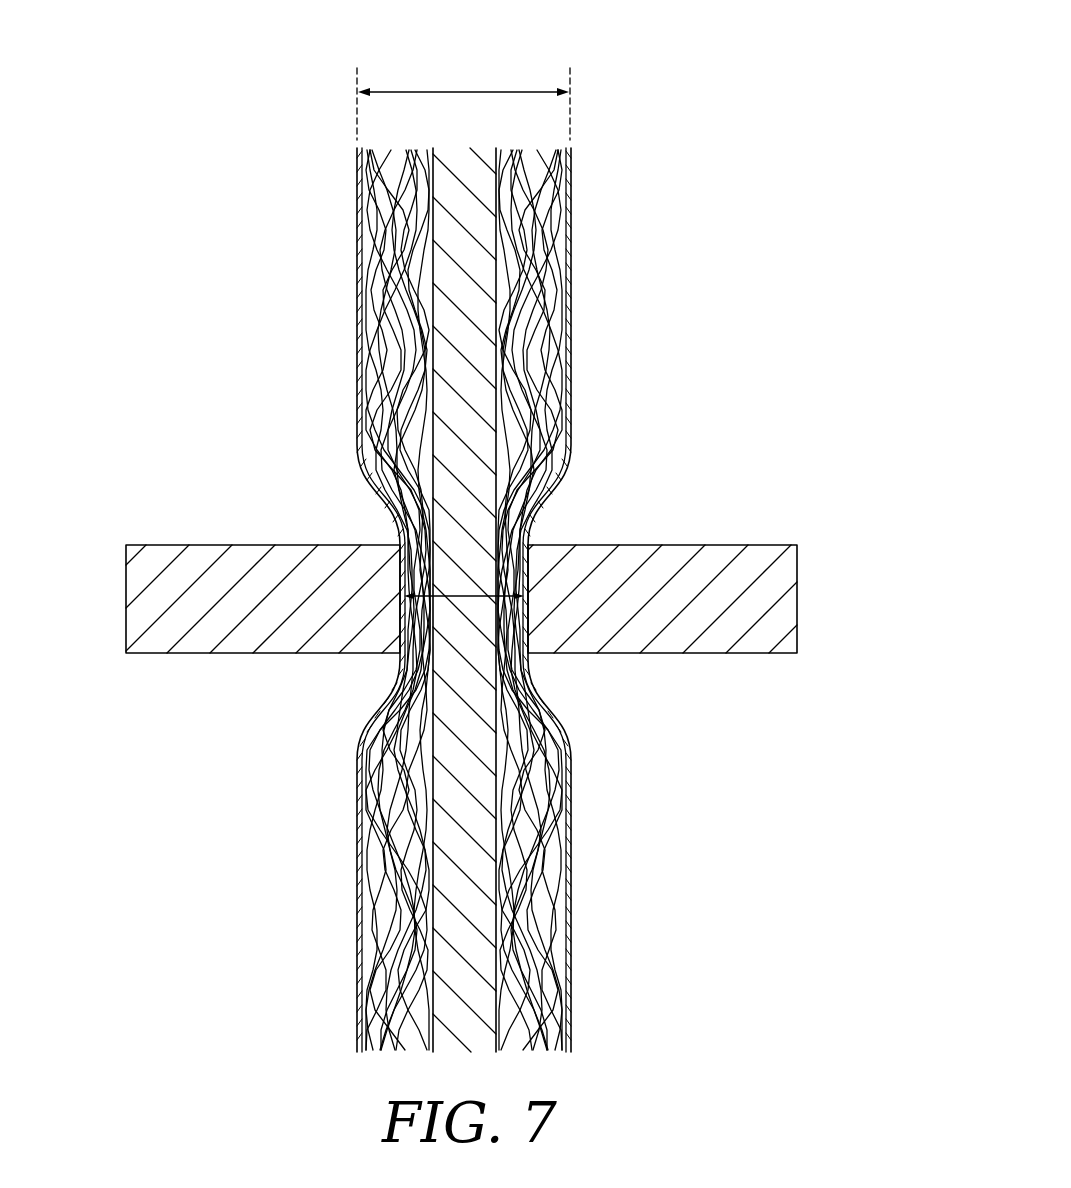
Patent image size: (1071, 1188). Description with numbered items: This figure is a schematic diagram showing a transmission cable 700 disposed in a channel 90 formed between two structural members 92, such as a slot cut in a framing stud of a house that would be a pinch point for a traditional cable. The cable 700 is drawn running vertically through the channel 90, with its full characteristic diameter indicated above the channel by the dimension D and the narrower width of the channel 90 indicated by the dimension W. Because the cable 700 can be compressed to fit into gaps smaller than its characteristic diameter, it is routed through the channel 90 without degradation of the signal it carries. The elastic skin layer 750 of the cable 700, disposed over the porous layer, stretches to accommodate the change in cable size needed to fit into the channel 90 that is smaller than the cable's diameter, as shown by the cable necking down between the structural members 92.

The elastic skin layer 750 is at (358, 263).
The transmission cable 700 is at (718, 182).
The structural members 92 is at (213, 585).
The channel 90 is at (538, 533).
The tube diameter D is at (463, 100).
The neck width W is at (470, 600).